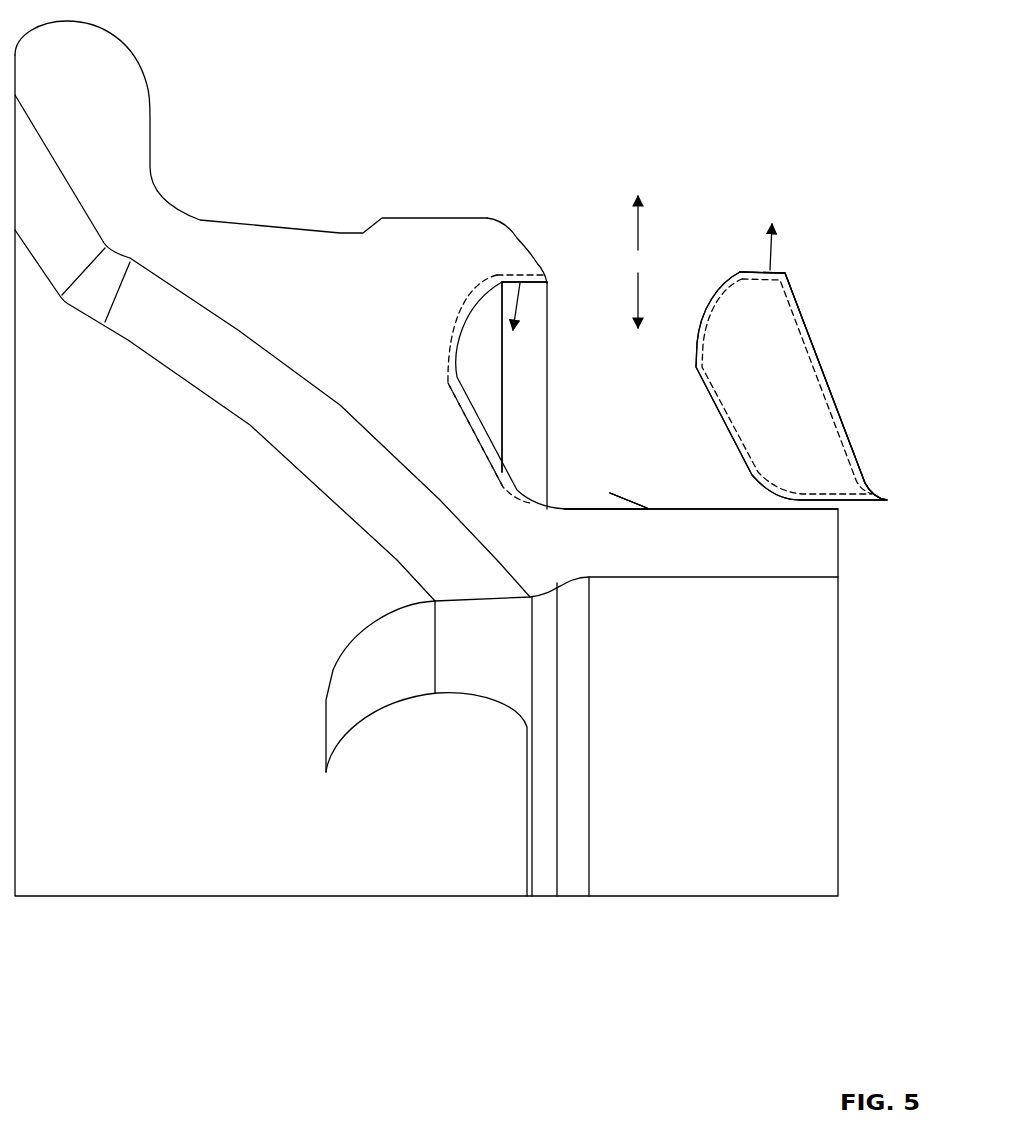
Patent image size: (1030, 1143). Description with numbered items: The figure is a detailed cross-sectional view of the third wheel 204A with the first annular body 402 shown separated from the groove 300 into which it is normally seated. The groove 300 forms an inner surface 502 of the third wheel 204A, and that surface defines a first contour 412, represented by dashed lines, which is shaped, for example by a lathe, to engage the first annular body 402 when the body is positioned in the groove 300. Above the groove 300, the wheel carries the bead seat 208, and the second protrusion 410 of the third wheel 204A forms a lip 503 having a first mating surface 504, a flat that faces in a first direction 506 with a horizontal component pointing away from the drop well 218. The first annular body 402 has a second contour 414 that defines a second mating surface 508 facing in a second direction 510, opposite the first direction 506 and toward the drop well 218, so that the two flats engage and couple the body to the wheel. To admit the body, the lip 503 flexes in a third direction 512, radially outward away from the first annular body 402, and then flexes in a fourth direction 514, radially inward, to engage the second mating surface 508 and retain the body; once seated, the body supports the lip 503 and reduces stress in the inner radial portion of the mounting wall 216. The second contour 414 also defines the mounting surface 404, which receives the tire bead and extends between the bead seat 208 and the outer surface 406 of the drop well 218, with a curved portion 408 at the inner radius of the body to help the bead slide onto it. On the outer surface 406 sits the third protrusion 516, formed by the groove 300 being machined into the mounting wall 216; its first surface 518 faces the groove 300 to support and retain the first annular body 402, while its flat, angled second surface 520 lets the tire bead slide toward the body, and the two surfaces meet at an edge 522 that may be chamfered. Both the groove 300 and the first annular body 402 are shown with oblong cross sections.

The bead seat 208 is at (207, 220).
The third wheel 204A is at (676, 777).
The second protrusion 410 is at (517, 238).
The inner surface 502 is at (462, 367).
The first direction 506 is at (497, 300).
The lip 503 is at (550, 279).
The first mating surface 504 is at (527, 283).
The third direction 512 is at (641, 217).
The fourth direction 514 is at (641, 307).
The groove 300 is at (596, 396).
The drop well 218 is at (818, 186).
The first annular body 402 is at (750, 405).
The second contour 414 is at (762, 280).
The mounting surface 404 is at (826, 388).
The curved portion 408 is at (878, 490).
The outer surface 406 is at (730, 509).
The second mating surface 508 is at (778, 272).
The second direction 510 is at (765, 272).
The mounting wall 216 is at (518, 490).
The edge 522 is at (610, 493).
The third protrusion 516 is at (612, 495).
The first surface 518 is at (607, 507).
The second surface 520 is at (640, 502).
The first contour 412 is at (507, 490).